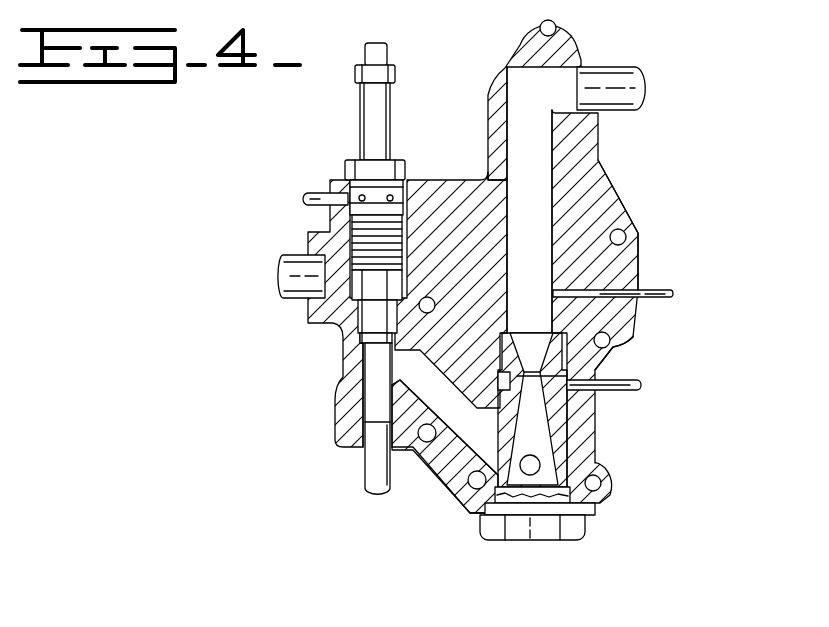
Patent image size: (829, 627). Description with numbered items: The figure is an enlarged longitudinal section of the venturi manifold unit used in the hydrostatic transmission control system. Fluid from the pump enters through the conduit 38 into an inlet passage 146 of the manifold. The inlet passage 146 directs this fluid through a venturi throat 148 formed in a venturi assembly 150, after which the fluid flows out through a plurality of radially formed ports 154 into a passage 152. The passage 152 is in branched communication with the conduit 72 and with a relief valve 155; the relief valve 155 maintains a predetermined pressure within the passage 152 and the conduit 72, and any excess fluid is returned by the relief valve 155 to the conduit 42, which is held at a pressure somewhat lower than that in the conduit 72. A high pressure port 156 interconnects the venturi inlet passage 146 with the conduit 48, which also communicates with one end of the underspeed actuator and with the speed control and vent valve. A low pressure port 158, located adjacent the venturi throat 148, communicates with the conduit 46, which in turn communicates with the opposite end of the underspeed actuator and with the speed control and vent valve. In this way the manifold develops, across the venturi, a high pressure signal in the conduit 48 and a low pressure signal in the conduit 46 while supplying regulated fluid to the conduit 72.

The conduit 38 is at (630, 77).
The conduit 42 is at (292, 265).
The conduit 46 is at (642, 385).
The conduit 48 is at (668, 288).
The conduit 72 is at (380, 455).
The inlet passage 146 is at (555, 107).
The venturi throat 148 is at (530, 347).
The venturi assembly 150 is at (569, 409).
The passage 152 is at (442, 475).
The radially formed ports 154 is at (507, 466).
The relief valve 155 is at (352, 328).
The high pressure port 156 is at (600, 290).
The low pressure port 158 is at (595, 375).